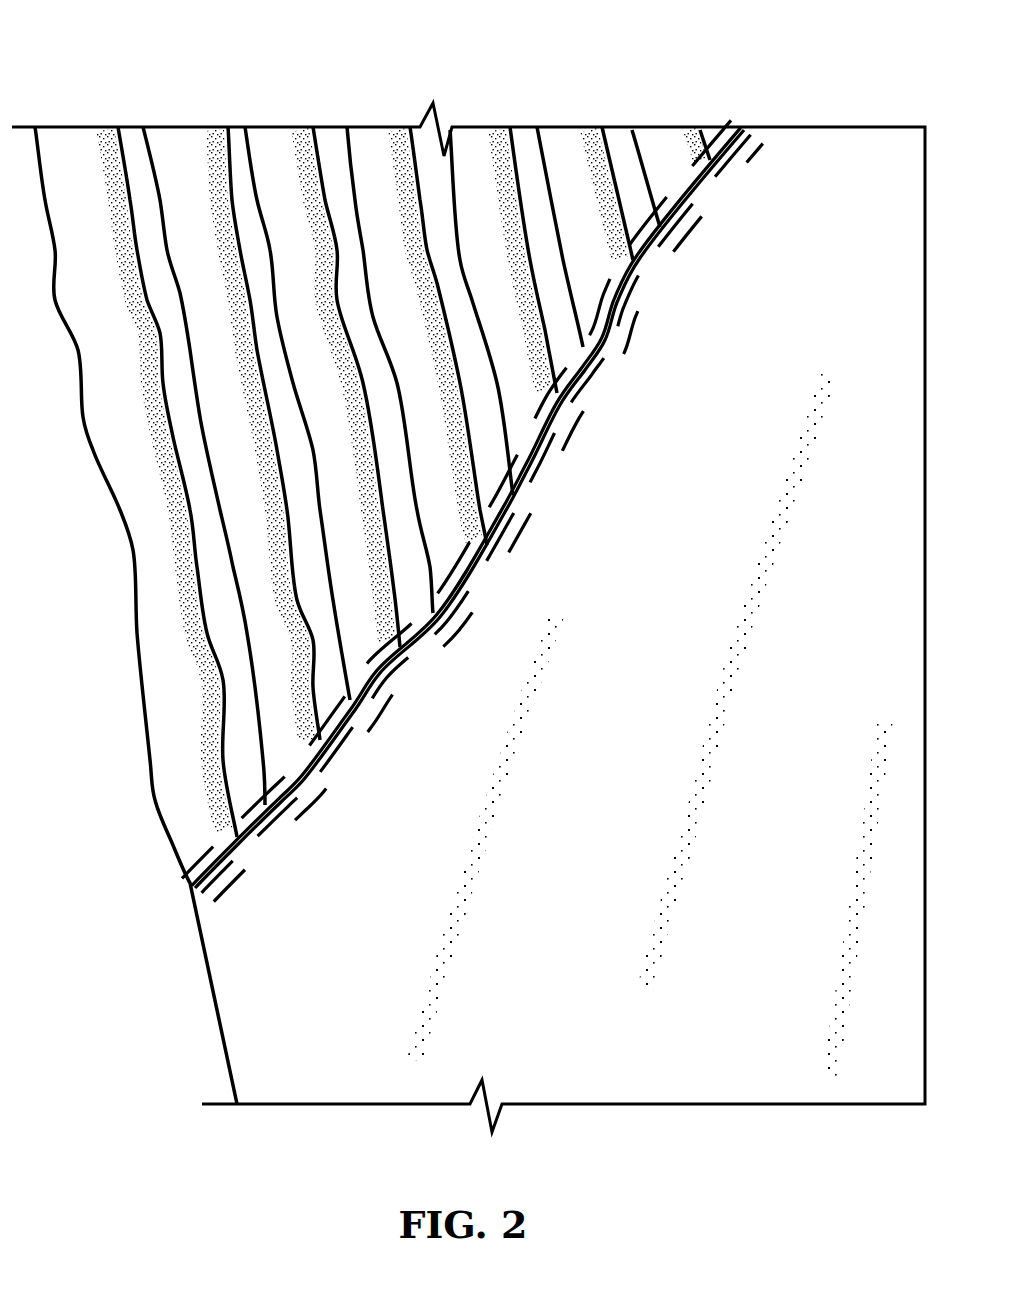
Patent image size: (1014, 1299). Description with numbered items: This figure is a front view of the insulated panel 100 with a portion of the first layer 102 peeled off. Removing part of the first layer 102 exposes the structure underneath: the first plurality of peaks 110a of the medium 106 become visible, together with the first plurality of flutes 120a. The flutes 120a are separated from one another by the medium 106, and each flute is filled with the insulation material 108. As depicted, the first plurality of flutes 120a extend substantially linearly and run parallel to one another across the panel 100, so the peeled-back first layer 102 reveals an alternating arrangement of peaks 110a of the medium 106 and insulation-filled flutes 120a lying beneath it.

The insulated panel 100 is at (142, 60).
The first layer 102 is at (823, 170).
The medium 106 is at (620, 158).
The insulation material 108 is at (575, 160).
The first plurality of peaks 110a is at (540, 217).
The first plurality of flutes 120a is at (110, 273).